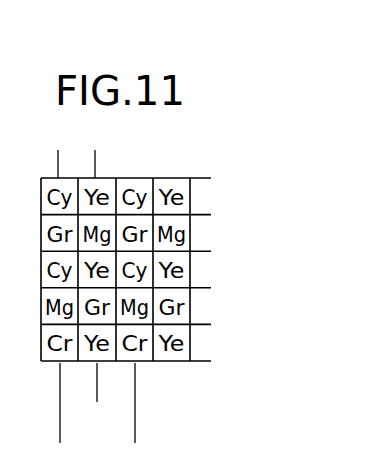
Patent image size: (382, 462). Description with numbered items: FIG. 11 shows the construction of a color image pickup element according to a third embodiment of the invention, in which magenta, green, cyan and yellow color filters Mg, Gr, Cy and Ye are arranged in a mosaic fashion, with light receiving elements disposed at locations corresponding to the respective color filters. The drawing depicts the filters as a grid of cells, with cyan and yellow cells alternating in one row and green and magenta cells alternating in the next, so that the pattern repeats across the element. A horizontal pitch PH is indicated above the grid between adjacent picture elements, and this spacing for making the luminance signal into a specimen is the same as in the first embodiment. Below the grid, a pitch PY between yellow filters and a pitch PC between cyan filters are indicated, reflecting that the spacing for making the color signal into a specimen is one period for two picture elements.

The horizontal pitch of color filter elements PH is at (95, 156).
The pitch of yellow filter elements PY is at (97, 398).
The pitch of cyan filter elements PC is at (135, 435).